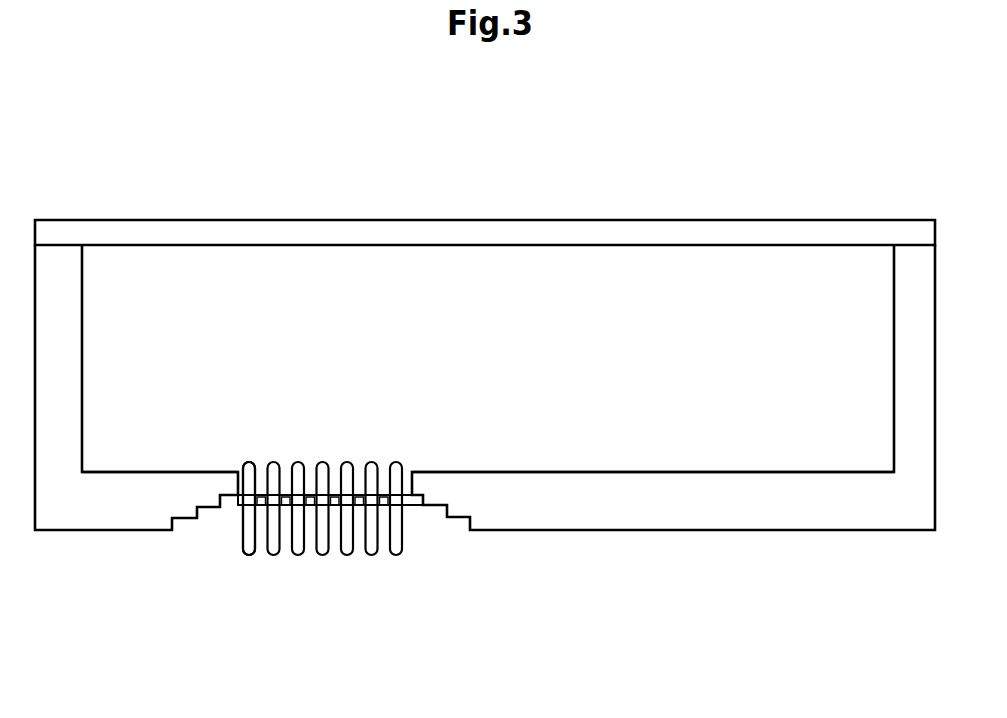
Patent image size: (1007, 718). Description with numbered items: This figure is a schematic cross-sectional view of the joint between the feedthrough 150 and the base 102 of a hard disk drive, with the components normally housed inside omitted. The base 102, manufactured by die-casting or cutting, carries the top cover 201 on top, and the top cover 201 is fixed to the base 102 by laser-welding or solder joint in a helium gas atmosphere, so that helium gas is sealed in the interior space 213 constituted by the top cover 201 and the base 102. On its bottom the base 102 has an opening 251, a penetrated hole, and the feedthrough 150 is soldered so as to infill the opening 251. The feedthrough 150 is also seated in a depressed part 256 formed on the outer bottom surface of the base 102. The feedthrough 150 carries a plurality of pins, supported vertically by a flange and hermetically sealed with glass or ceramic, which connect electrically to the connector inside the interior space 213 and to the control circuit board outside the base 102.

The base 102 is at (716, 531).
The feedthrough 150 is at (244, 541).
The top cover 201 is at (345, 220).
The interior space 213 is at (556, 471).
The opening 251 is at (402, 467).
The depressed part 256 is at (429, 531).